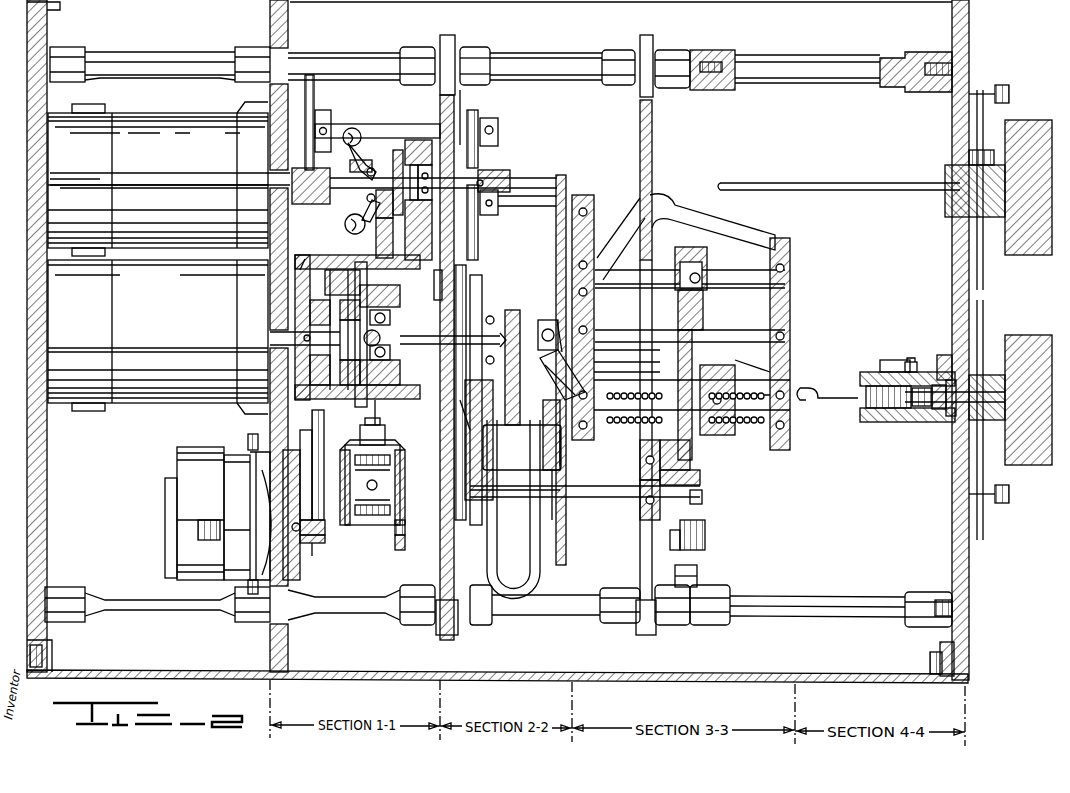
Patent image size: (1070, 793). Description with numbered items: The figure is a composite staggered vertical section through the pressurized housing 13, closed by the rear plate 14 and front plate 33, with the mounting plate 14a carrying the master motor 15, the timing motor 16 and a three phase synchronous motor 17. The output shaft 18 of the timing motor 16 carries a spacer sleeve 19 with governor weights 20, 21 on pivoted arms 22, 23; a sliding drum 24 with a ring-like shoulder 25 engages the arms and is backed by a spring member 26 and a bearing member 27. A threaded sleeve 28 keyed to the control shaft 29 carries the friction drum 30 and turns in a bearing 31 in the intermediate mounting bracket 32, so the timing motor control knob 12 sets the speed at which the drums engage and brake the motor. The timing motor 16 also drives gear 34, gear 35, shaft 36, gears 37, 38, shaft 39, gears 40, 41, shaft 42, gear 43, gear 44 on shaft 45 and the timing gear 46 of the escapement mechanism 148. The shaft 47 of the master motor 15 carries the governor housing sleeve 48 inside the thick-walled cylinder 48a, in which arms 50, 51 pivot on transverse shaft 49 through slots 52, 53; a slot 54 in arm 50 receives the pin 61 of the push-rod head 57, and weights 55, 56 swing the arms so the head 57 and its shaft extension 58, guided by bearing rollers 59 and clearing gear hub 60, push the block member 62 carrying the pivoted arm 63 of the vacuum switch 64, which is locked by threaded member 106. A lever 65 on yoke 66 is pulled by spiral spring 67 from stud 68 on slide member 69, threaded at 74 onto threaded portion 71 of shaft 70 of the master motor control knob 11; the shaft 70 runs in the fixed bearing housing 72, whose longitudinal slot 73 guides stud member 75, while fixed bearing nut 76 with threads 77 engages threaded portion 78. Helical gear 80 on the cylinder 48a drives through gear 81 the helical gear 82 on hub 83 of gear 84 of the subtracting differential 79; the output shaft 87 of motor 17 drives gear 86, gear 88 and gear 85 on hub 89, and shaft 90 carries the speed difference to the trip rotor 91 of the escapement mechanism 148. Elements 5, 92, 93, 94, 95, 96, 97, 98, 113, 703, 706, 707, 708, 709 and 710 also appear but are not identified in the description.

The shaft 5 is at (374, 262).
The master motor control knob 11 is at (1040, 368).
The timing motor control knob 12 is at (1047, 156).
The housing 13 is at (616, 679).
The rear plate 14 is at (29, 133).
The mounting plate 14a is at (272, 27).
The master motor 15 is at (81, 326).
The timing motor 16 is at (159, 169).
The three phase synchronous motor 17 is at (206, 499).
The output shaft 18 is at (298, 186).
The spacer sleeve 19 is at (360, 202).
The centrifugal governor weight 20 is at (352, 128).
The centrifugal governor weight 21 is at (345, 228).
The pivotally mounted arm 22 is at (356, 152).
The pivotally mounted arm 23 is at (378, 215).
The sliding drum 24 is at (384, 225).
The ring-like shoulder 25 is at (384, 150).
The resilient spring member 26 is at (404, 212).
The bearing member 27 is at (422, 215).
The threaded sleeve 28 is at (486, 180).
The control shaft 29 is at (520, 182).
The friction drum 30 is at (414, 232).
The bearing 31 is at (480, 155).
The intermediate mounting bracket 32 is at (455, 280).
The front plate 33 is at (957, 284).
The gear 34 is at (306, 204).
The gear 35 is at (314, 98).
The shaft 36 is at (390, 125).
The gear 37 is at (472, 115).
The gear 38 is at (478, 250).
The shaft 39 is at (517, 207).
The gear 40 is at (560, 176).
The gear 41 is at (556, 242).
The shaft 42 is at (620, 270).
The gear 43 is at (688, 262).
The gear 44 is at (690, 300).
The shaft 45 is at (730, 332).
The timing gear 46 is at (680, 352).
The shaft 47 is at (278, 346).
The governor housing sleeve 48 is at (326, 312).
The thick-walled cylinder 48a is at (300, 263).
The transverse shaft 49 is at (352, 360).
The governor arm 50 is at (372, 284).
The governor arm 51 is at (352, 378).
The slot 52 is at (400, 297).
The slot 53 is at (391, 368).
The slot 54 is at (349, 268).
The weight 55 is at (330, 268).
The weight 56 is at (378, 402).
The push-rod head 57 is at (375, 317).
The shaft extension 58 is at (460, 335).
The bearing rollers 59 is at (436, 292).
The gear hub 60 is at (455, 306).
The pin 61 is at (335, 284).
The block member 62 is at (536, 322).
The pivoted arm 63 is at (512, 330).
The vacuum switch 64 is at (552, 456).
The lever 65 is at (554, 330).
The yoke 66 is at (552, 390).
The spiral spring 67 is at (590, 356).
The stud 68 is at (852, 398).
The slide member 69 is at (866, 414).
The shaft 70 is at (975, 412).
The threaded portion 71 is at (896, 423).
The fixed bearing housing 72 is at (946, 430).
The longitudinal slot 73 is at (890, 368).
The threads 74 is at (876, 424).
The stud member 75 is at (912, 362).
The fixed bearing nut 76 is at (935, 425).
The threads 77 is at (918, 424).
The threaded portion 78 is at (945, 375).
The subtracting differential gear system 79 is at (370, 538).
The helical gear 80 is at (472, 302).
The gear 81 is at (455, 414).
The helical gear 82 is at (402, 540).
The hub 83 is at (400, 455).
The gear 84 is at (398, 522).
The gear 85 is at (330, 530).
The gear 86 is at (318, 550).
The output shaft 87 is at (266, 514).
The gear 88 is at (320, 417).
The hub 89 is at (330, 445).
The shaft 90 is at (598, 487).
The trip rotor 91 is at (687, 472).
The spring 92 is at (736, 424).
The bearing 93 is at (697, 350).
The rod 94 is at (652, 351).
The bearing 95 is at (722, 366).
The rod 96 is at (652, 370).
The block 97 is at (692, 450).
The bearing 98 is at (648, 452).
The threaded member 106 is at (706, 547).
The roller 113 is at (698, 572).
The escapement mechanism 148 is at (703, 497).
The rod 703 is at (556, 516).
The block 706 is at (575, 470).
The shaft 707 is at (580, 492).
The housing 708 is at (476, 420).
The housing 709 is at (466, 410).
The tube 710 is at (484, 572).